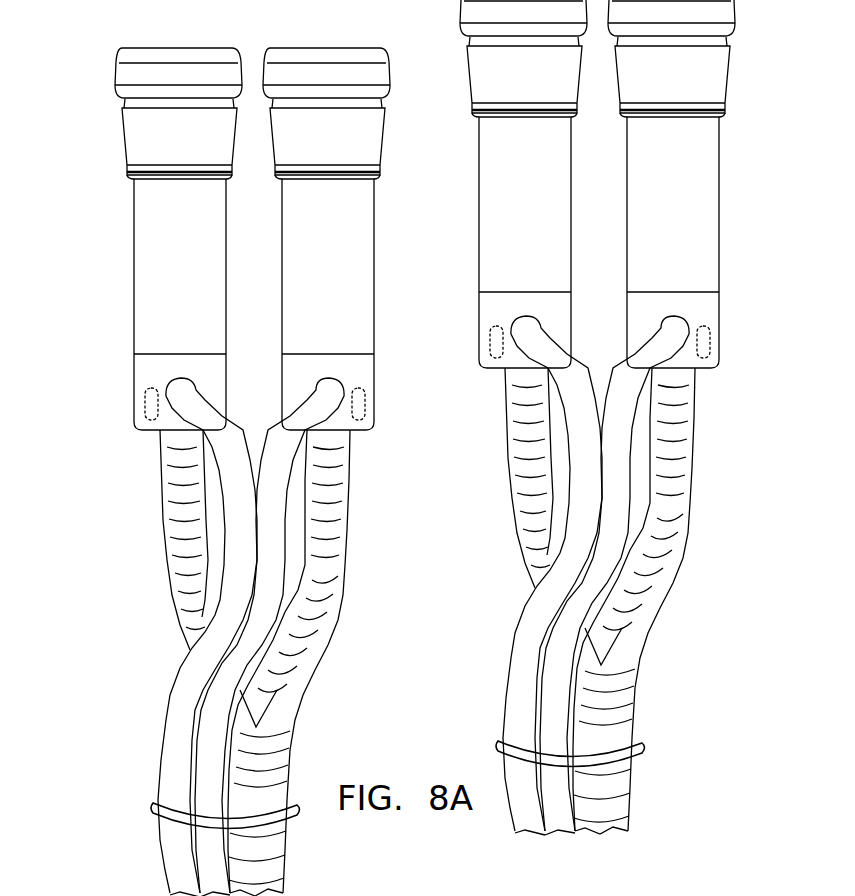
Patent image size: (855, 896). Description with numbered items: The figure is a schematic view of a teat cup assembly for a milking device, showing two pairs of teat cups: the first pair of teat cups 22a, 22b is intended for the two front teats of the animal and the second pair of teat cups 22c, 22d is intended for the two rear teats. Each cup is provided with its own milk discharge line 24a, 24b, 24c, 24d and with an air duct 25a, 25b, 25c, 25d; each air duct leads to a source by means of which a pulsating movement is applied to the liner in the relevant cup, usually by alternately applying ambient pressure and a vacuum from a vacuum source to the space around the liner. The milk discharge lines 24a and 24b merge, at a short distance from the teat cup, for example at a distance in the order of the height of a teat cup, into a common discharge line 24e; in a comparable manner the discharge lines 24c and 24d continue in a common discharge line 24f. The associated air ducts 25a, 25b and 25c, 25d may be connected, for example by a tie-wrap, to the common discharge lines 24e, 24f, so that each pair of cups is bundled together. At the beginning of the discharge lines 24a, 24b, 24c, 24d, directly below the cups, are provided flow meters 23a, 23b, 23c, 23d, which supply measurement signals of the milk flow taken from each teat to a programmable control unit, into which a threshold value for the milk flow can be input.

The teat cup 22a is at (172, 247).
The teat cup 22b is at (355, 239).
The teat cup 22c is at (493, 184).
The teat cup 22d is at (699, 184).
The flow meter 23a is at (152, 407).
The flow meter 23b is at (360, 407).
The flow meter 23c is at (449, 343).
The flow meter 23d is at (748, 343).
The milk discharge line 24a is at (183, 513).
The milk discharge line 24b is at (330, 513).
The milk discharge line 24c is at (486, 478).
The milk discharge line 24d is at (672, 601).
The common discharge line 24e is at (262, 851).
The common discharge line 24f is at (597, 773).
The air duct 25a is at (183, 700).
The air duct 25b is at (222, 700).
The air duct 25c is at (513, 575).
The air duct 25d is at (634, 575).